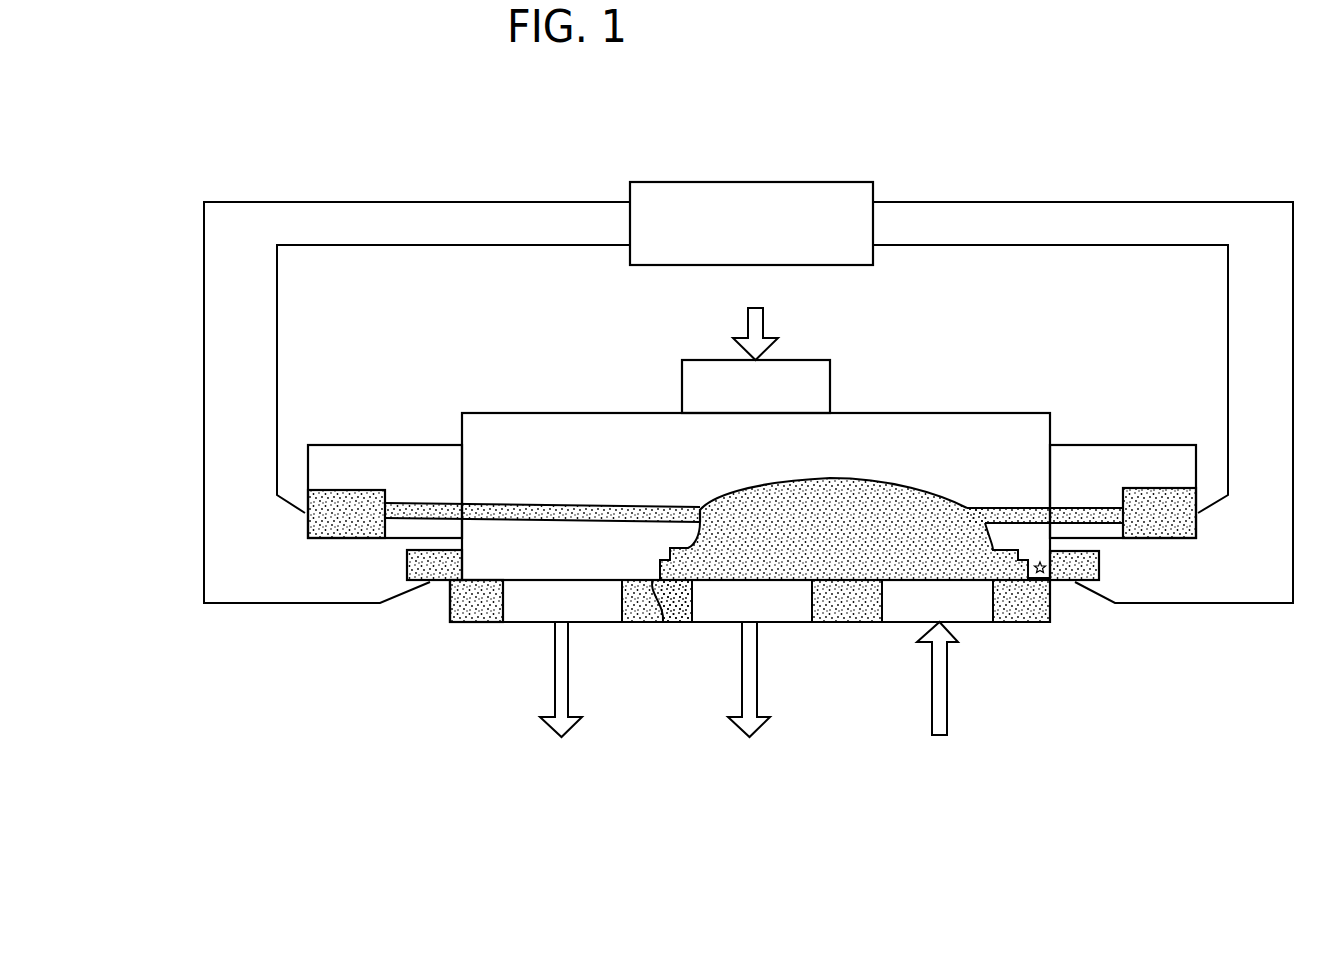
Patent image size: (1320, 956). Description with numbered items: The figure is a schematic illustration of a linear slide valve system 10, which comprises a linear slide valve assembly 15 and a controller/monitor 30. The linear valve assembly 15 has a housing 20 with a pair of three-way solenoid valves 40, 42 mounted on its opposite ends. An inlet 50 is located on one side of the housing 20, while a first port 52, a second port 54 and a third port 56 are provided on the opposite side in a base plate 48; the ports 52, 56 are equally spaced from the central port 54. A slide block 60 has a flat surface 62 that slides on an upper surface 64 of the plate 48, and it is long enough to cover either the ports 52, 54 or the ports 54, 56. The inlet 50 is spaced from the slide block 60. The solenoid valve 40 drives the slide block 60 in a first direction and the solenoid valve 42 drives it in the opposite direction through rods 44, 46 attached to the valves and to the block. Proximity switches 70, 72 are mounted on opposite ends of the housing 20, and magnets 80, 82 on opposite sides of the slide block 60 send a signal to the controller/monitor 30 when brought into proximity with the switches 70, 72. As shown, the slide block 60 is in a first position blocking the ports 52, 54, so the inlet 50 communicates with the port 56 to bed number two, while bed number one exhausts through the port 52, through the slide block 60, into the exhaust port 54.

The linear slide valve system 10 is at (432, 709).
The linear slide valve assembly 15 is at (982, 378).
The housing 20 is at (587, 430).
The controller/monitor 30 is at (812, 190).
The solenoid valve 40 is at (1123, 444).
The solenoid valve 42 is at (385, 442).
The rod 44 is at (996, 508).
The rod 46 is at (493, 503).
The base plate 48 is at (1052, 622).
The inlet 50 is at (808, 375).
The first port 52 is at (987, 612).
The second port 54 is at (790, 622).
The third port 56 is at (592, 622).
The slide block 60 is at (893, 482).
The flat surface 62 is at (912, 590).
The upper surface 64 is at (488, 580).
The proximity switch 70 is at (1099, 568).
The proximity switch 72 is at (407, 563).
The magnet 80 is at (1022, 558).
The magnet 82 is at (663, 622).